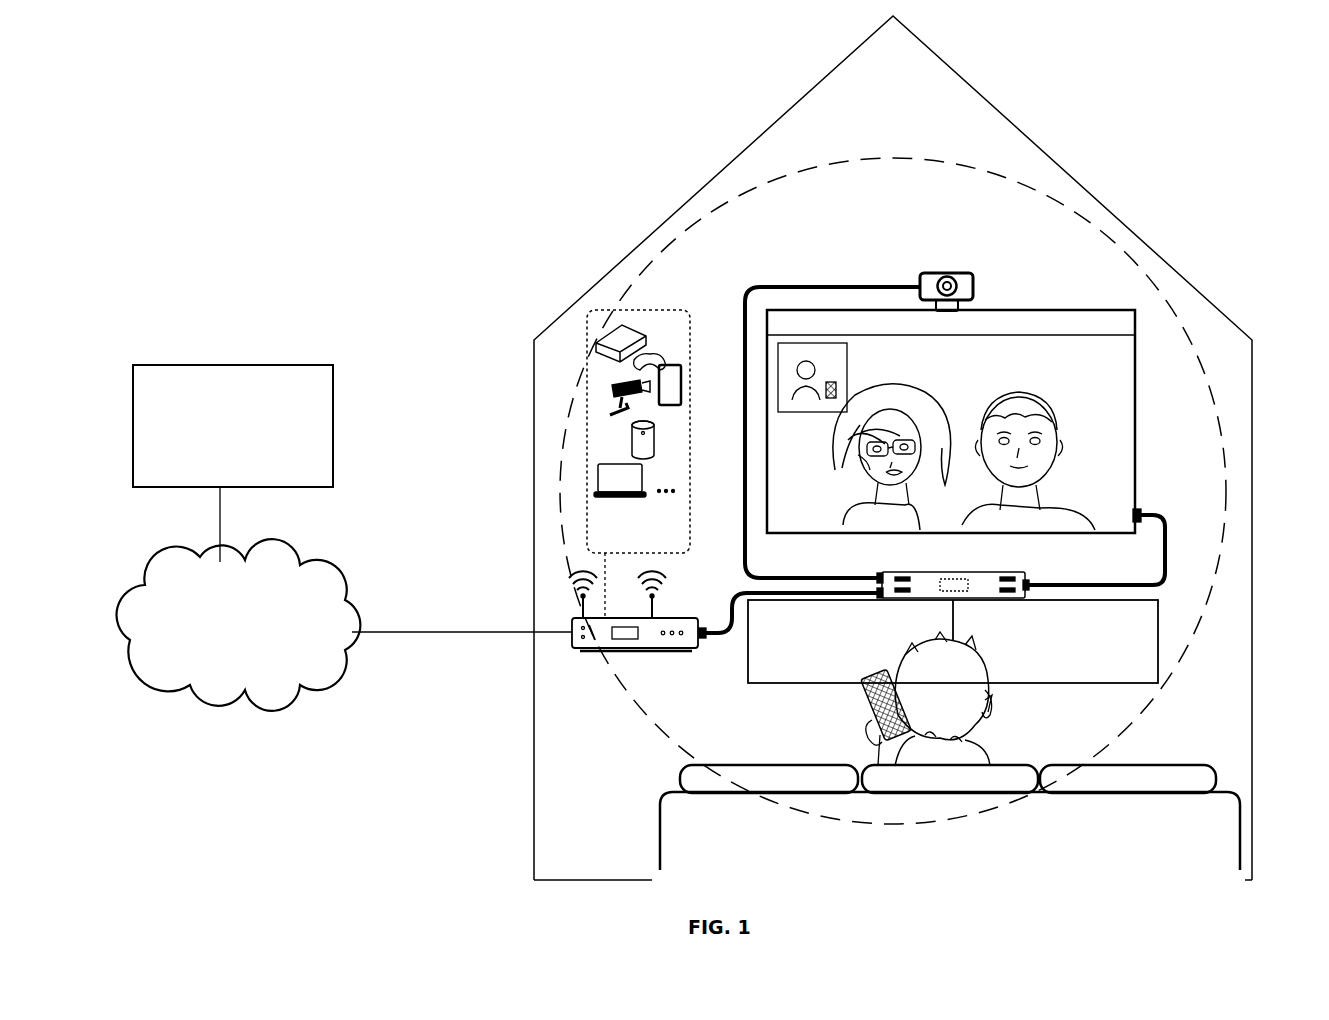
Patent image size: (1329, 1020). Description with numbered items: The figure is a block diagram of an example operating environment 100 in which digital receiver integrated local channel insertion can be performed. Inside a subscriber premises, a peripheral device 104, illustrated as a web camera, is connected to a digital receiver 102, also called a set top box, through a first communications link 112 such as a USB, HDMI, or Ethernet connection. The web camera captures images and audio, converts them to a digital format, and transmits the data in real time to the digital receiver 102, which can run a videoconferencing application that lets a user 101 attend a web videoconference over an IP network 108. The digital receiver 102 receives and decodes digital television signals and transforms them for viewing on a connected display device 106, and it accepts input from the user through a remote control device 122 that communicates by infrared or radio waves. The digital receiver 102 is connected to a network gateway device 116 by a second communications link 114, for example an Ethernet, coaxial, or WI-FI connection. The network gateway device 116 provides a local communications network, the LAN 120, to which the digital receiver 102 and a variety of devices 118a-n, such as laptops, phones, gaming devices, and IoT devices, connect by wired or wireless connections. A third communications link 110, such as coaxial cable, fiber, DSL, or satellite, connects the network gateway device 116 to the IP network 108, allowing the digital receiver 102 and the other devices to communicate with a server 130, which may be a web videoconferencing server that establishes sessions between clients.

The operating environment 100 is at (1286, 108).
The user 101 is at (975, 760).
The digital receiver 102 is at (957, 572).
The peripheral device 104 is at (941, 273).
The display device 106 is at (1050, 300).
The IP network 108 is at (239, 625).
The third communications link 110 is at (518, 636).
The first communications link 112 is at (782, 285).
The second communications link 114 is at (735, 597).
The network gateway device 116 is at (598, 650).
The devices 118a-n is at (638, 464).
The LAN 120 is at (680, 240).
The remote control device 122 is at (870, 700).
The server 130 is at (233, 463).